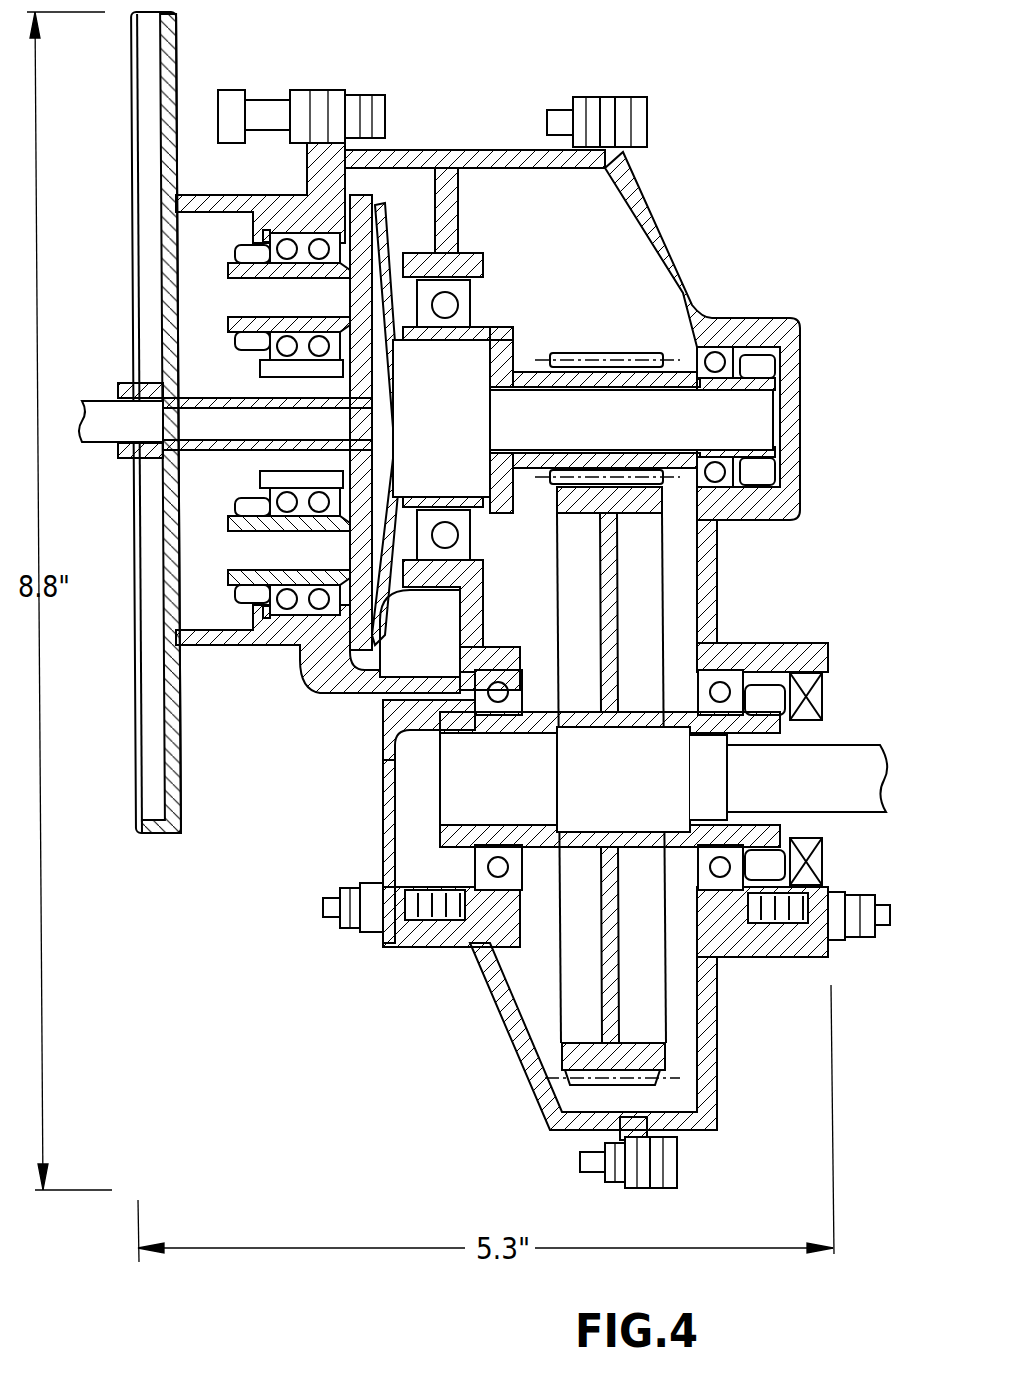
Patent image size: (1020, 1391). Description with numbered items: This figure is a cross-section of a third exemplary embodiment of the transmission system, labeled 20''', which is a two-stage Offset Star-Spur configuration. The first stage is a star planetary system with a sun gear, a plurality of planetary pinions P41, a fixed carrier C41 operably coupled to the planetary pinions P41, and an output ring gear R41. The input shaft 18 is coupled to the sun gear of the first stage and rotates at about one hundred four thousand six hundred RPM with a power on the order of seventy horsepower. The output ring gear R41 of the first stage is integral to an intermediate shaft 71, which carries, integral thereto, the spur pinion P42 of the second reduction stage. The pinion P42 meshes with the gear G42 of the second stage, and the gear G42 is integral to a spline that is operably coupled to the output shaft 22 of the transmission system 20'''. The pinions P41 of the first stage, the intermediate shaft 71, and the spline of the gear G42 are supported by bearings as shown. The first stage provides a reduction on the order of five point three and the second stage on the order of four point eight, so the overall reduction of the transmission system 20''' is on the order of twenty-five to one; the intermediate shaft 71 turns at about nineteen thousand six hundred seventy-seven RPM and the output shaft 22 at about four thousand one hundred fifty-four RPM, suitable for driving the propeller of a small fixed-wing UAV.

The two-stage transmission system 20''' is at (510, 600).
The input shaft 18 is at (100, 446).
The output shaft 22 is at (848, 745).
The intermediate shaft 71 is at (510, 342).
The planetary pinions P41 is at (395, 213).
The fixed carrier C41 is at (282, 650).
The output ring gear R41 is at (393, 592).
The spur pinion P42 is at (612, 355).
The gear G42 is at (662, 1050).